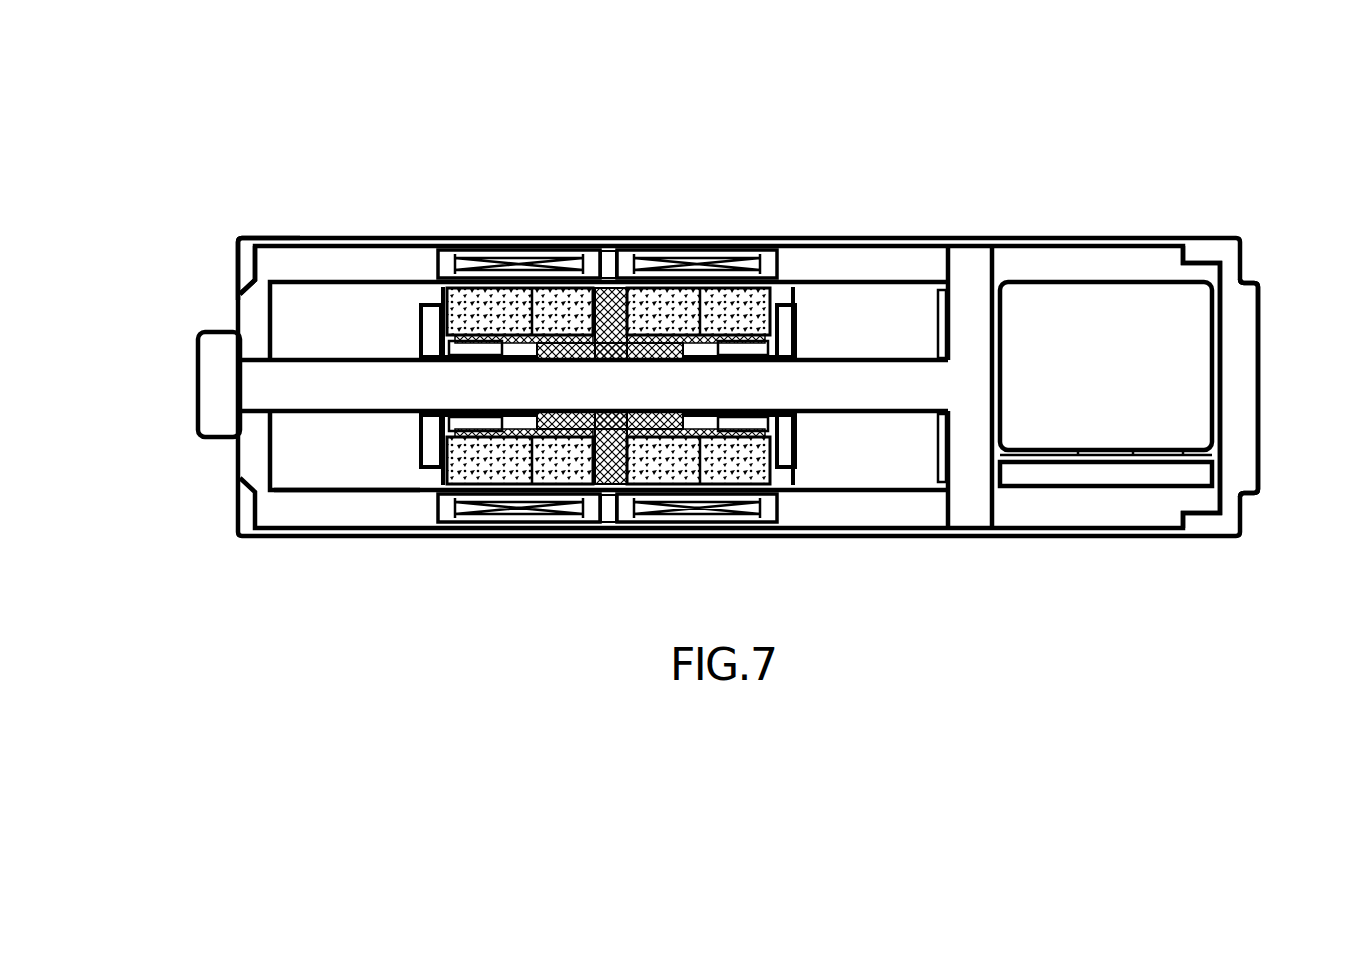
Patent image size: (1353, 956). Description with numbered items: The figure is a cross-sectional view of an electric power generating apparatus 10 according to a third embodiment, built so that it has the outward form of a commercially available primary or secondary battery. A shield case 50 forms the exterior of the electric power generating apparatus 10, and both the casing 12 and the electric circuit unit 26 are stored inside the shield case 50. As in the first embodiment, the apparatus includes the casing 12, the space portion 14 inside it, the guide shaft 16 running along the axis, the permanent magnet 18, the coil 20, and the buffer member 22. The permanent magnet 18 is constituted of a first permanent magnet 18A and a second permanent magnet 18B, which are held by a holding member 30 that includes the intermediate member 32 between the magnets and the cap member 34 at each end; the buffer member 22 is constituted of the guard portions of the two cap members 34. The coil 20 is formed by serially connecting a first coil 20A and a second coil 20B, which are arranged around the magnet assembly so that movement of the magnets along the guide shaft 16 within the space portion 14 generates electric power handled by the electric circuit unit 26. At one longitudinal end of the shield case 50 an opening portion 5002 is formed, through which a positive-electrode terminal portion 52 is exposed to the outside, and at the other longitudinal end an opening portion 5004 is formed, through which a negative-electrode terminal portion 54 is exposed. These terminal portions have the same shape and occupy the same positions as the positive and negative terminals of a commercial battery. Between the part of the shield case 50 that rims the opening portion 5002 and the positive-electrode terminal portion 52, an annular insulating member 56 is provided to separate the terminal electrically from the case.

The electric power generating apparatus 10 is at (808, 142).
The casing 12 is at (853, 508).
The space portion 14 is at (288, 453).
The guide shaft 16 is at (343, 413).
The permanent magnet 18 is at (508, 330).
The first permanent magnet 18A is at (443, 290).
The second permanent magnet 18B is at (783, 296).
The coil 20 is at (583, 338).
The first coil 20A is at (515, 250).
The second coil 20B is at (690, 250).
The buffer member 22 is at (803, 340).
The electric circuit unit 26 is at (1130, 337).
The holding member 30 is at (403, 457).
The intermediate member 32 is at (600, 497).
The cap member 34 is at (651, 326).
The shield case 50 is at (905, 240).
The positive-electrode terminal portion 52 is at (197, 388).
The negative-electrode terminal portion 54 is at (1260, 377).
The annular insulating member 56 is at (236, 269).
The opening portion 5002 is at (236, 249).
The opening portion 5004 is at (1226, 253).